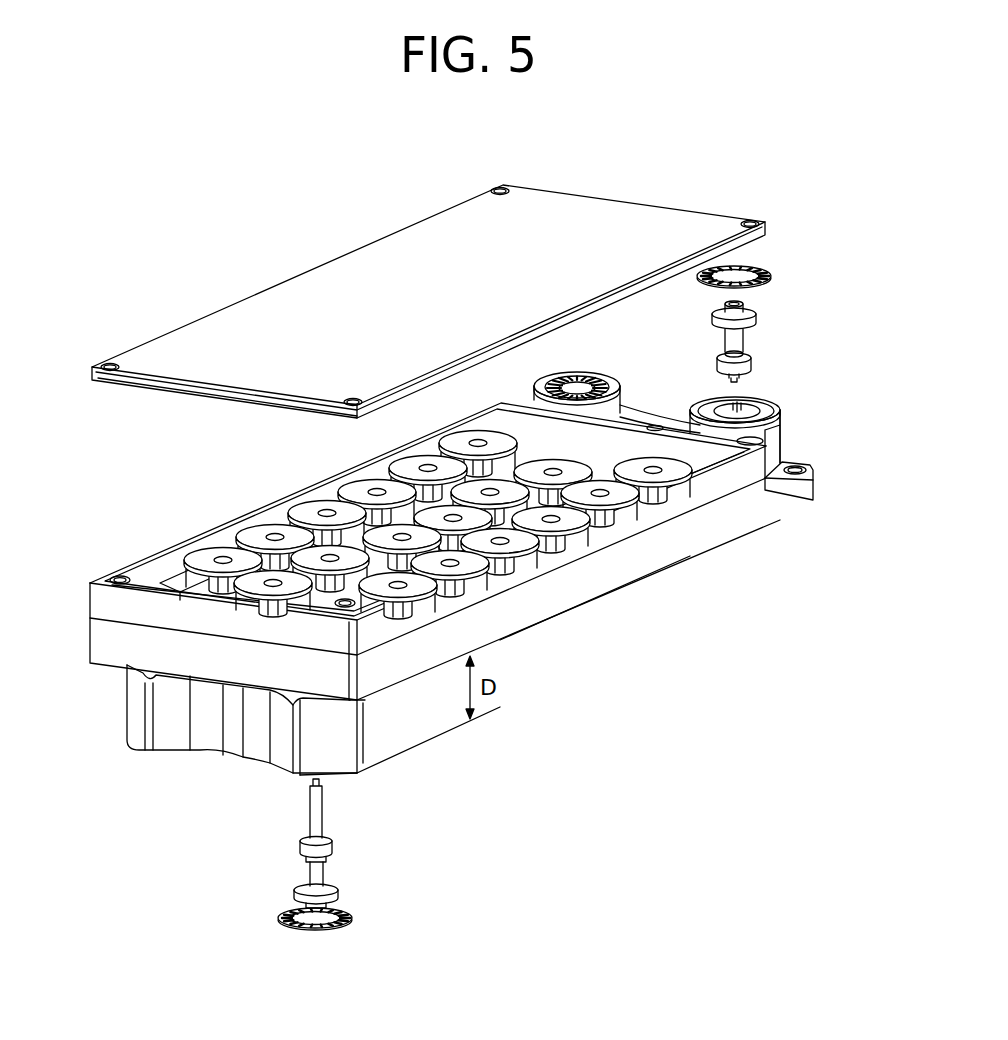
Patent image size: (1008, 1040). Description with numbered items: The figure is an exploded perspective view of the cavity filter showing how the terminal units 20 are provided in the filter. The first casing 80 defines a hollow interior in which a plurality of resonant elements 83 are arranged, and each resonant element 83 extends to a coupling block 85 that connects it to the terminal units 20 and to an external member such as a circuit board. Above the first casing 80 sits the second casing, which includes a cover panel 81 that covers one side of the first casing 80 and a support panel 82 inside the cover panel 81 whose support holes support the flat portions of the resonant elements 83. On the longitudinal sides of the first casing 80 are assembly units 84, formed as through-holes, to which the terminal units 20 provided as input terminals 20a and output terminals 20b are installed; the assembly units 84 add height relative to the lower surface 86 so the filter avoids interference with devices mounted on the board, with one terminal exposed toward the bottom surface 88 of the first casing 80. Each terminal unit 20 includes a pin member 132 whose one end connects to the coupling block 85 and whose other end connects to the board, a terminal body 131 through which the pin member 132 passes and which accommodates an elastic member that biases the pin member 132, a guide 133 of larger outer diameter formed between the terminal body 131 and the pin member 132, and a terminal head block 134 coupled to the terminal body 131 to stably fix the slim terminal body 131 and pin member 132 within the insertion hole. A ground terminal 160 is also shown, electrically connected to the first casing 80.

The first casing 80 is at (615, 578).
The cover panel 81 is at (365, 252).
The support panel 82 is at (148, 352).
The resonant elements 83 is at (675, 460).
The assembly units 84 is at (135, 740).
The coupling block 85 is at (195, 580).
The lower surface 86 is at (677, 563).
The bottom surface 88 is at (300, 773).
The input terminal 20a is at (638, 354).
The output terminal 20b is at (150, 775).
The terminal unit 20 is at (295, 895).
The terminal body 131 is at (324, 876).
The pin member 132 is at (322, 812).
The guide 133 is at (333, 852).
The terminal head block 134 is at (335, 896).
The ground terminal 160 is at (262, 920).